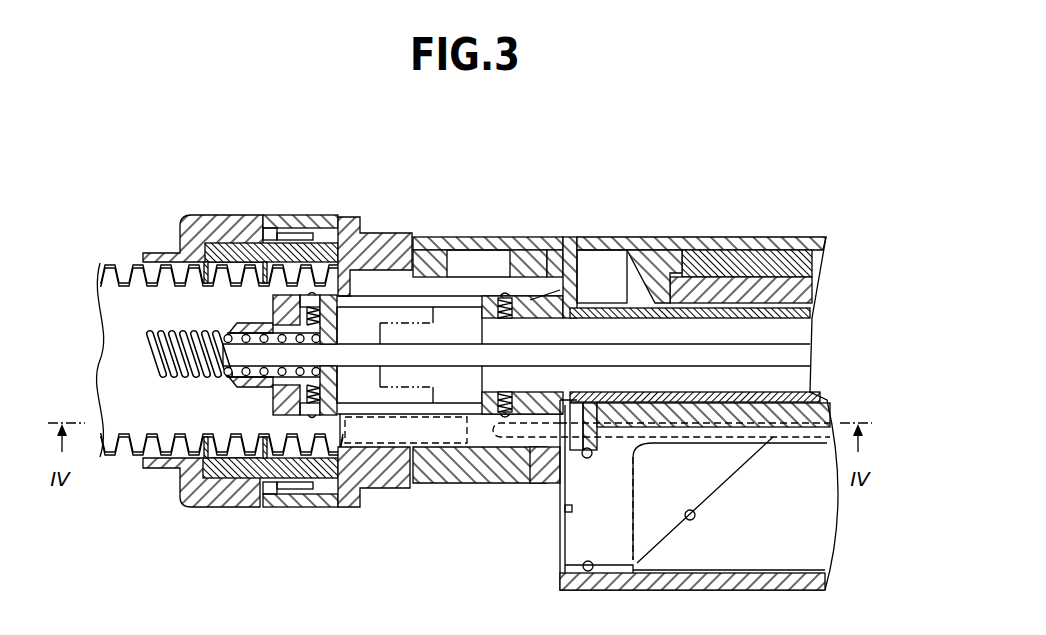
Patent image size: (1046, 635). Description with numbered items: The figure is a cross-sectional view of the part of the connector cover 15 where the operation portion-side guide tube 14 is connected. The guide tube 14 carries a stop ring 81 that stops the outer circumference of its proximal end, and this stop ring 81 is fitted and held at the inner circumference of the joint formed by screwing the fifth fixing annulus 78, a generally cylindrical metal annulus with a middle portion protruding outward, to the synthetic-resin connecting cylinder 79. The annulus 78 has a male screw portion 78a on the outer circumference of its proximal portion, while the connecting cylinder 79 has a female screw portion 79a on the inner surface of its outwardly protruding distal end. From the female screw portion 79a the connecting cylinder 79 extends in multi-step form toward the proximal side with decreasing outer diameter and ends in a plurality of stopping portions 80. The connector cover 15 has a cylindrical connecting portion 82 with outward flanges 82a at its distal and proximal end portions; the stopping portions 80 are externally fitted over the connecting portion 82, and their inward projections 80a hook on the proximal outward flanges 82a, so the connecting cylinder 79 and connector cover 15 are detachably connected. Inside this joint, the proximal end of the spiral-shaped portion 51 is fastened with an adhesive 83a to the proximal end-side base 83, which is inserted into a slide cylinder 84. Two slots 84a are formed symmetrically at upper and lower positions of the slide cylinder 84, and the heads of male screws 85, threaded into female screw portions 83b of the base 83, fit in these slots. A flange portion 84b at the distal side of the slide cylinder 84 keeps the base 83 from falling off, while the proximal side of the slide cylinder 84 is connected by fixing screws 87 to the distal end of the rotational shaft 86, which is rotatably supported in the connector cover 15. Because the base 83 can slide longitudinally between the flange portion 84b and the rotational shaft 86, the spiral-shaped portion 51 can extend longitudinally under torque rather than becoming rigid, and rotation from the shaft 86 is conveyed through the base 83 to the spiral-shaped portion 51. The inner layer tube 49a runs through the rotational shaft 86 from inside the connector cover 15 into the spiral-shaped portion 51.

The operation portion-side guide tube 14 is at (122, 262).
The connector cover 15 is at (647, 240).
The inner layer tube 49a is at (536, 364).
The spiral-shaped portion 51 is at (146, 392).
The fifth fixing annulus 78 is at (198, 222).
The male screw portion 78a is at (295, 233).
The connecting cylinder 79 is at (369, 238).
The female screw portion 79a is at (270, 232).
The stopping portions 80 is at (497, 240).
The projections 80a is at (540, 240).
The stop ring 81 is at (228, 250).
The connecting portion 82 is at (459, 256).
The outward flanges 82a is at (425, 255).
The proximal end-side base 83 is at (330, 312).
The adhesive 83a is at (232, 383).
The female screw portions 83b is at (314, 398).
The slide cylinder 84 is at (533, 296).
The slots 84a is at (383, 293).
The flange portion 84b is at (268, 392).
The male screws 85 is at (350, 490).
The rotational shaft 86 is at (626, 302).
The fixing screws 87 is at (492, 420).